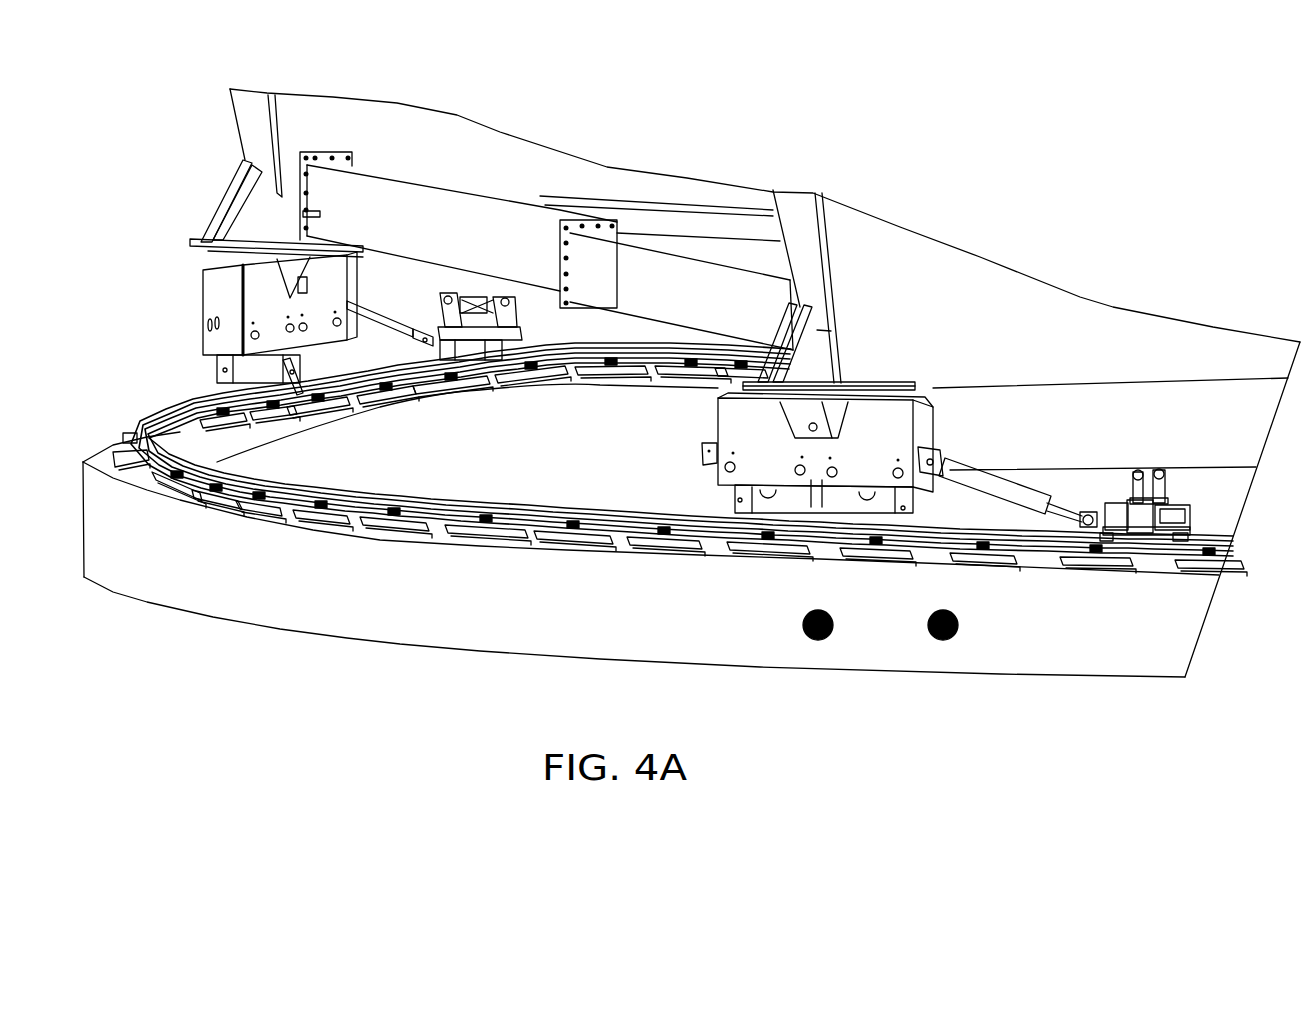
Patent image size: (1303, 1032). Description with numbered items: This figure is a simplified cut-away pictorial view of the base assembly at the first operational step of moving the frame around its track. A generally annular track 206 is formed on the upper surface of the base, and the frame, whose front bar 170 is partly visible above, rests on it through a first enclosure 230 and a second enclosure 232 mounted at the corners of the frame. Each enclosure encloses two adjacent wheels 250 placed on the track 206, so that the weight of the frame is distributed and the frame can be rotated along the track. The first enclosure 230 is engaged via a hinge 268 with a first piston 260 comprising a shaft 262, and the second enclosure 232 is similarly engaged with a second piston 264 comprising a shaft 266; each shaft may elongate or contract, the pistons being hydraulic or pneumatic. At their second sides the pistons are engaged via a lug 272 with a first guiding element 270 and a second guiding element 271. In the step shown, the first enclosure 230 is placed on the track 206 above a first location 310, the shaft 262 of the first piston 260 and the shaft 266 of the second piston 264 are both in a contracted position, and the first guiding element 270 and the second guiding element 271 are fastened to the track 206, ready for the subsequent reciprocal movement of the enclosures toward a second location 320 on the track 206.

The front bar 170 is at (427, 220).
The track 206 is at (507, 490).
The first enclosure 230 is at (773, 467).
The second enclosure 232 is at (215, 345).
The wheel 250 is at (220, 367).
The first piston 260 is at (983, 480).
The shaft 262 is at (1100, 517).
The second piston 264 is at (430, 335).
The shaft 266 is at (387, 327).
The hinge 268 is at (937, 453).
The first guiding element 270 is at (1160, 507).
The second guiding element 271 is at (467, 320).
The lug 272 is at (1115, 500).
The first location 310 is at (823, 640).
The second location 320 is at (947, 640).